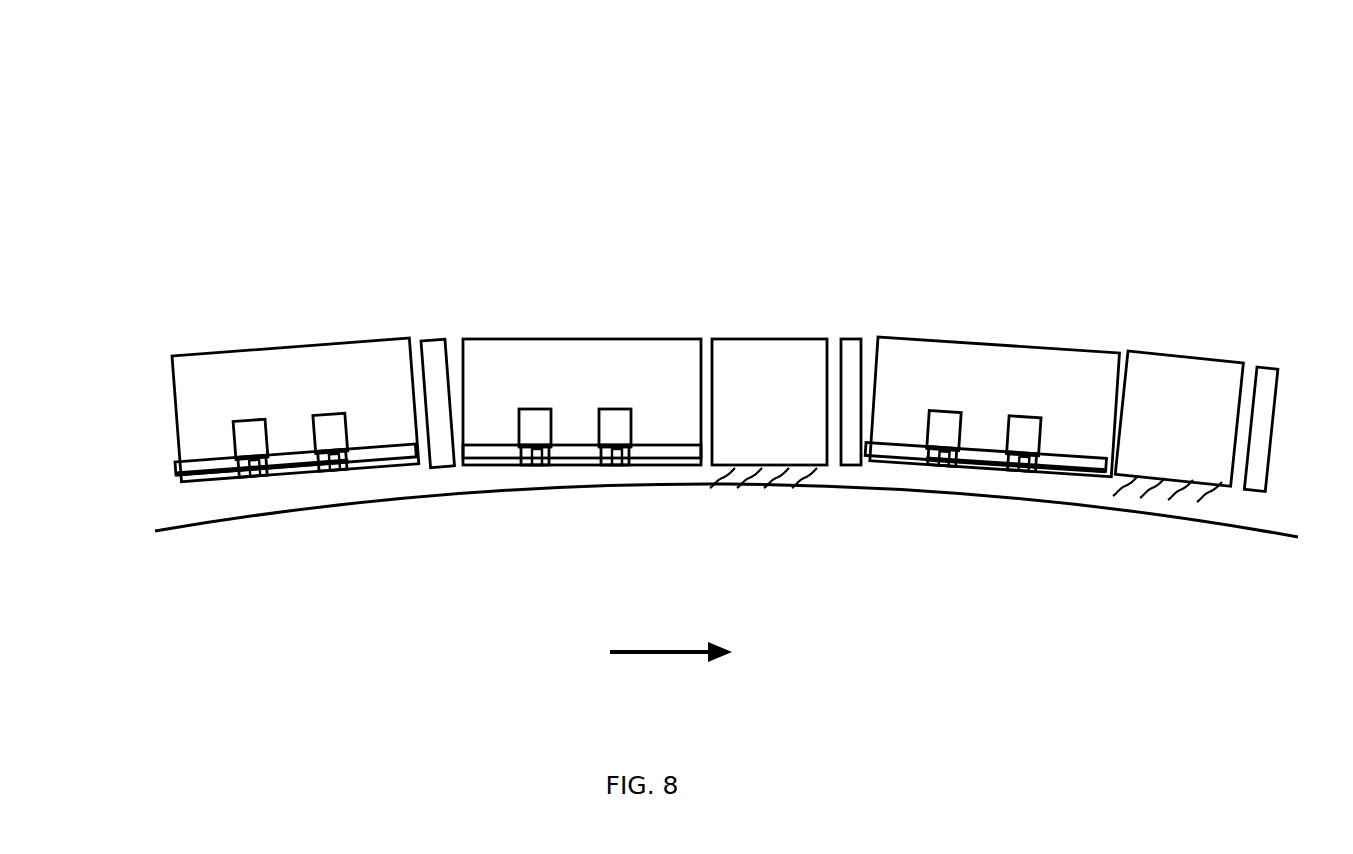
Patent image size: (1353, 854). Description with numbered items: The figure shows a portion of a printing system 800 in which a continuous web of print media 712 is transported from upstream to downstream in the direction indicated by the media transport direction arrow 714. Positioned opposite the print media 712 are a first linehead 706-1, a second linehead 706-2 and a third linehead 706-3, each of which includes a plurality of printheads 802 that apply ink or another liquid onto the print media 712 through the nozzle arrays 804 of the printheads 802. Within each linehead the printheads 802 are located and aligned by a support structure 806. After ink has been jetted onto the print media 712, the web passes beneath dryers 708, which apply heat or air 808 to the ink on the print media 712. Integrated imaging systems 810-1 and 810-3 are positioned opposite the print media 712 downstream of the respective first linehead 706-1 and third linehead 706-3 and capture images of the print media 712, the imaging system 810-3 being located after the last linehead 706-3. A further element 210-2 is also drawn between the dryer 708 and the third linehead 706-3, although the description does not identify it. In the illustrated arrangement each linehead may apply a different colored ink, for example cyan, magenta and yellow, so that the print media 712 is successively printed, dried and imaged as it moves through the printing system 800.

The printing system 800 is at (666, 114).
The first linehead 706-1 is at (220, 350).
The second linehead 706-2 is at (520, 338).
The third linehead 706-3 is at (930, 338).
The integrated imaging system 810-1 is at (428, 341).
The integrated imaging system 810-3 is at (1268, 368).
The dryer 708 is at (745, 339).
The sensor bar 210-2 is at (845, 339).
The printhead 802 is at (248, 420).
The nozzle array 804 is at (252, 477).
The support structure 806 is at (177, 473).
The heat or air 808 is at (703, 498).
The print media 712 is at (1273, 522).
The media transport direction arrow 714 is at (672, 654).